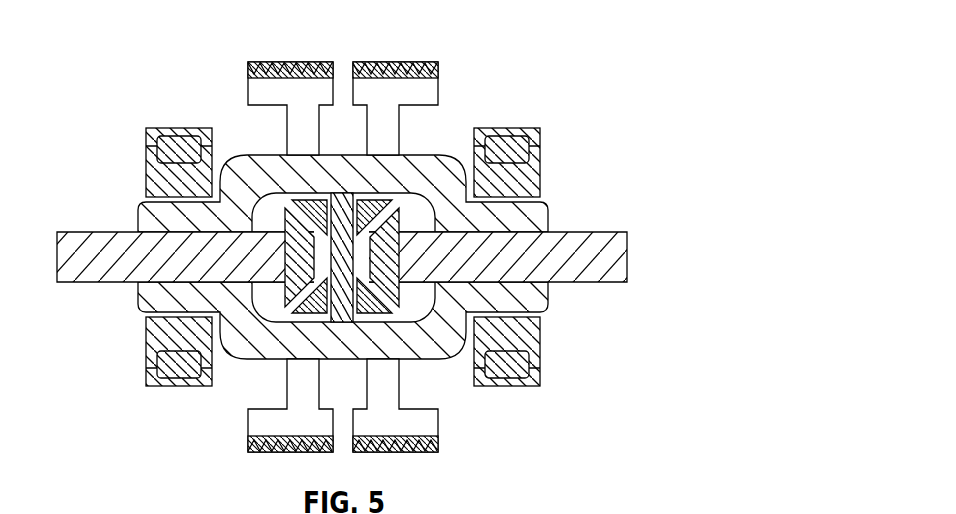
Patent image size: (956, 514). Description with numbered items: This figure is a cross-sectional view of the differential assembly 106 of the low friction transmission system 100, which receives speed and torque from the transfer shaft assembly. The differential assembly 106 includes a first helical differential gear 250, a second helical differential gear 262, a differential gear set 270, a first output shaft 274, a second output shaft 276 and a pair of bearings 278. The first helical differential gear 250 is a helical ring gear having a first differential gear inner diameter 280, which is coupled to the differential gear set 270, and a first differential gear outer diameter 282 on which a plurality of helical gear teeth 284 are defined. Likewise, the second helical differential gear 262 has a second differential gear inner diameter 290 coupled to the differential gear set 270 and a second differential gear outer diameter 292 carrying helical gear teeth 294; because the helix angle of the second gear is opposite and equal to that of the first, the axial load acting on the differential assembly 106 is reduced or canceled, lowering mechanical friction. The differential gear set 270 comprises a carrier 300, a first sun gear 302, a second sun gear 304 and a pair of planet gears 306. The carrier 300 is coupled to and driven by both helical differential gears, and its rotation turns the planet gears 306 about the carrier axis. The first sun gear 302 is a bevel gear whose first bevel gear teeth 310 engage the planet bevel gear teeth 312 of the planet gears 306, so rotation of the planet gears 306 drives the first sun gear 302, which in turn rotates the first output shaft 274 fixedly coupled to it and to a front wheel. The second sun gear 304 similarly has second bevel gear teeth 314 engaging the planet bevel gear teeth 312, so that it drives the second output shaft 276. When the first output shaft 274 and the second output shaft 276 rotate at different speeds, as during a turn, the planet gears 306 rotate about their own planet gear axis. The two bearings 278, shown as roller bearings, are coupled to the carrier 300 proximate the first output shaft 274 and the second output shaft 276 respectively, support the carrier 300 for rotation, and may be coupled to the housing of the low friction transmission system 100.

The low friction transmission system 100 is at (393, 261).
The differential assembly 106 is at (373, 250).
The first helical differential gear 250 is at (241, 53).
The second helical differential gear 262 is at (396, 50).
The differential gear set 270 is at (168, 453).
The first output shaft 274 is at (100, 213).
The second output shaft 276 is at (633, 215).
The bearings 278 is at (167, 117).
The first differential gear inner diameter 280 is at (243, 405).
The first differential gear outer diameter 282 is at (303, 62).
The helical gear teeth 284 is at (272, 448).
The second differential gear inner diameter 290 is at (441, 359).
The second differential gear outer diameter 292 is at (407, 62).
The helical gear teeth 294 is at (411, 449).
The carrier 300 is at (456, 176).
The first sun gear 302 is at (271, 297).
The second sun gear 304 is at (413, 227).
The planet gears 306 is at (391, 187).
The first bevel gear teeth 310 is at (299, 304).
The planet bevel gear teeth 312 is at (313, 195).
The second bevel gear teeth 314 is at (390, 198).